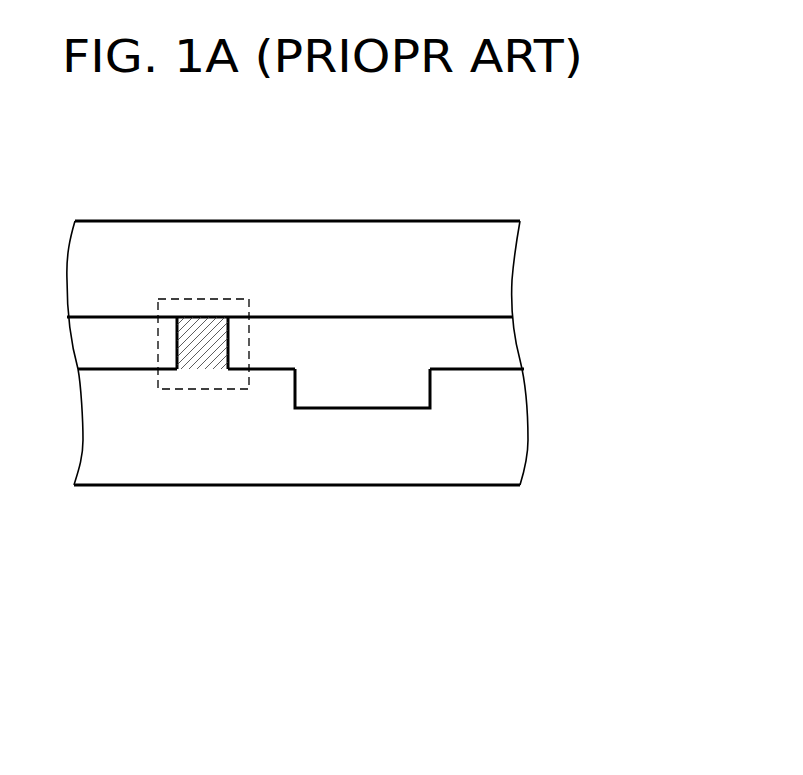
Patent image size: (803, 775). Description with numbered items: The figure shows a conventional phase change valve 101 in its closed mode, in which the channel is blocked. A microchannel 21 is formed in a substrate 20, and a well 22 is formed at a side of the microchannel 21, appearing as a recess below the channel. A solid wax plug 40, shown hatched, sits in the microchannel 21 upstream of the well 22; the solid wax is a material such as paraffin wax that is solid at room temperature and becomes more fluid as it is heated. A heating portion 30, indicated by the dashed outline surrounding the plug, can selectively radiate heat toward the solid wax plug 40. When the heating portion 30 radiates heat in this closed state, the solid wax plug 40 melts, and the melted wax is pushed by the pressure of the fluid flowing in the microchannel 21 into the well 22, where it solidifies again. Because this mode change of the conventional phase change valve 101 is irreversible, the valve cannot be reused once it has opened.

The conventional phase change valve 101 is at (560, 208).
The substrate 20 is at (385, 240).
The microchannel 21 is at (127, 370).
The well 22 is at (432, 390).
The heating portion 30 is at (198, 297).
The solid wax plug 40 is at (212, 357).